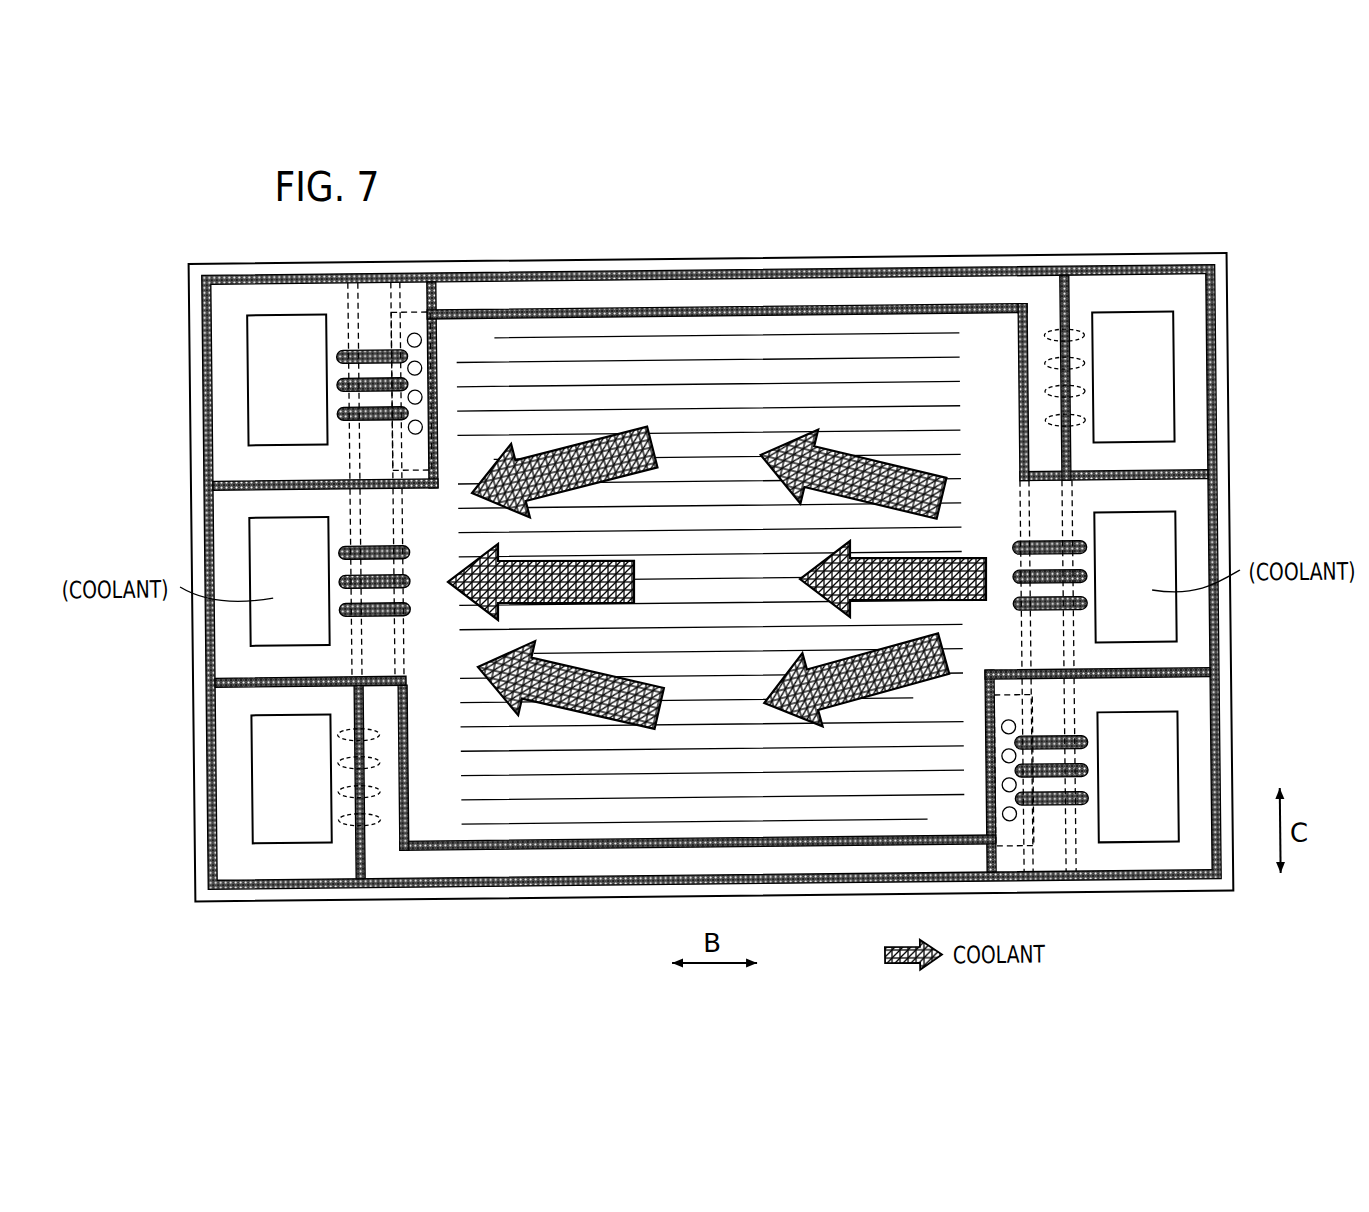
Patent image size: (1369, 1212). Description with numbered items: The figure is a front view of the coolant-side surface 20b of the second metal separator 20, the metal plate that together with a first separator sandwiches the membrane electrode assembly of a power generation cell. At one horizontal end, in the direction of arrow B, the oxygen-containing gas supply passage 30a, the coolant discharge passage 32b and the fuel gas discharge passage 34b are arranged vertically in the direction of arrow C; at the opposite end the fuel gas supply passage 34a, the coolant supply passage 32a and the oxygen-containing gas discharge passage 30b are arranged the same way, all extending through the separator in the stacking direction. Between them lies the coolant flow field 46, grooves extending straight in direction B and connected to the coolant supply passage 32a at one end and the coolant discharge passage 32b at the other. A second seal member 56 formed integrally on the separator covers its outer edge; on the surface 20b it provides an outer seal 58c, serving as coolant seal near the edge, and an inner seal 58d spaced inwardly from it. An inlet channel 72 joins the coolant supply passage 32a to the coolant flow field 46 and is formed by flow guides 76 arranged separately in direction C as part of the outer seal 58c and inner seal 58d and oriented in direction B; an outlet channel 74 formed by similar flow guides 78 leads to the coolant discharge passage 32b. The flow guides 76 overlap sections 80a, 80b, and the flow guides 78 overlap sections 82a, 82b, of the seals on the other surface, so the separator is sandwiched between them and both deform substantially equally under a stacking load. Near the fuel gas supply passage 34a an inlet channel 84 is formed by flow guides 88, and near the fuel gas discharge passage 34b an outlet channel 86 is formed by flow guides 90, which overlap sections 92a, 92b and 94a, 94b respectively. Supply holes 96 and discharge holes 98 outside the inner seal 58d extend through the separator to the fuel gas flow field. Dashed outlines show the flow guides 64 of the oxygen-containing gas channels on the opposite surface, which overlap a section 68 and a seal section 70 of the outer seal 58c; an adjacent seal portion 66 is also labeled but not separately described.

The second metal separator 20 is at (1079, 202).
The surface 20b is at (793, 294).
The oxygen-containing gas supply passage 30a is at (291, 779).
The oxygen-containing gas discharge passage 30b is at (1133, 377).
The coolant supply passage 32a is at (1135, 577).
The coolant discharge passage 32b is at (289, 581).
The fuel gas supply passage 34a is at (1137, 777).
The fuel gas discharge passage 34b is at (287, 380).
The coolant flow field 46 is at (635, 787).
The second seal member 56 is at (1100, 254).
The outer seal 58c is at (873, 275).
The inner seal 58d is at (975, 308).
The flow guides 64 is at (380, 818).
The seal portion 66 is at (1021, 331).
The overlapping section 68 is at (353, 771).
The seal overlapping section 70 is at (1062, 381).
The inlet channel 72 is at (1045, 617).
The outlet channel 74 is at (380, 542).
The flow guides 76 is at (1048, 546).
The flow guides 78 is at (375, 612).
The overlapping section 80a is at (1071, 499).
The overlapping section 80b is at (1024, 498).
The overlapping section 82a is at (356, 658).
The overlapping section 82b is at (401, 659).
The inlet channel 84 is at (1041, 814).
The outlet channel 86 is at (383, 344).
The flow guides 88 is at (1043, 739).
The flow guides 90 is at (400, 416).
The overlapping section 92a is at (1069, 697).
The overlapping section 92b is at (992, 700).
The overlapping section 94a is at (354, 458).
The overlapping section 94b is at (414, 460).
The supply holes 96 is at (1000, 817).
The discharge holes 98 is at (426, 338).